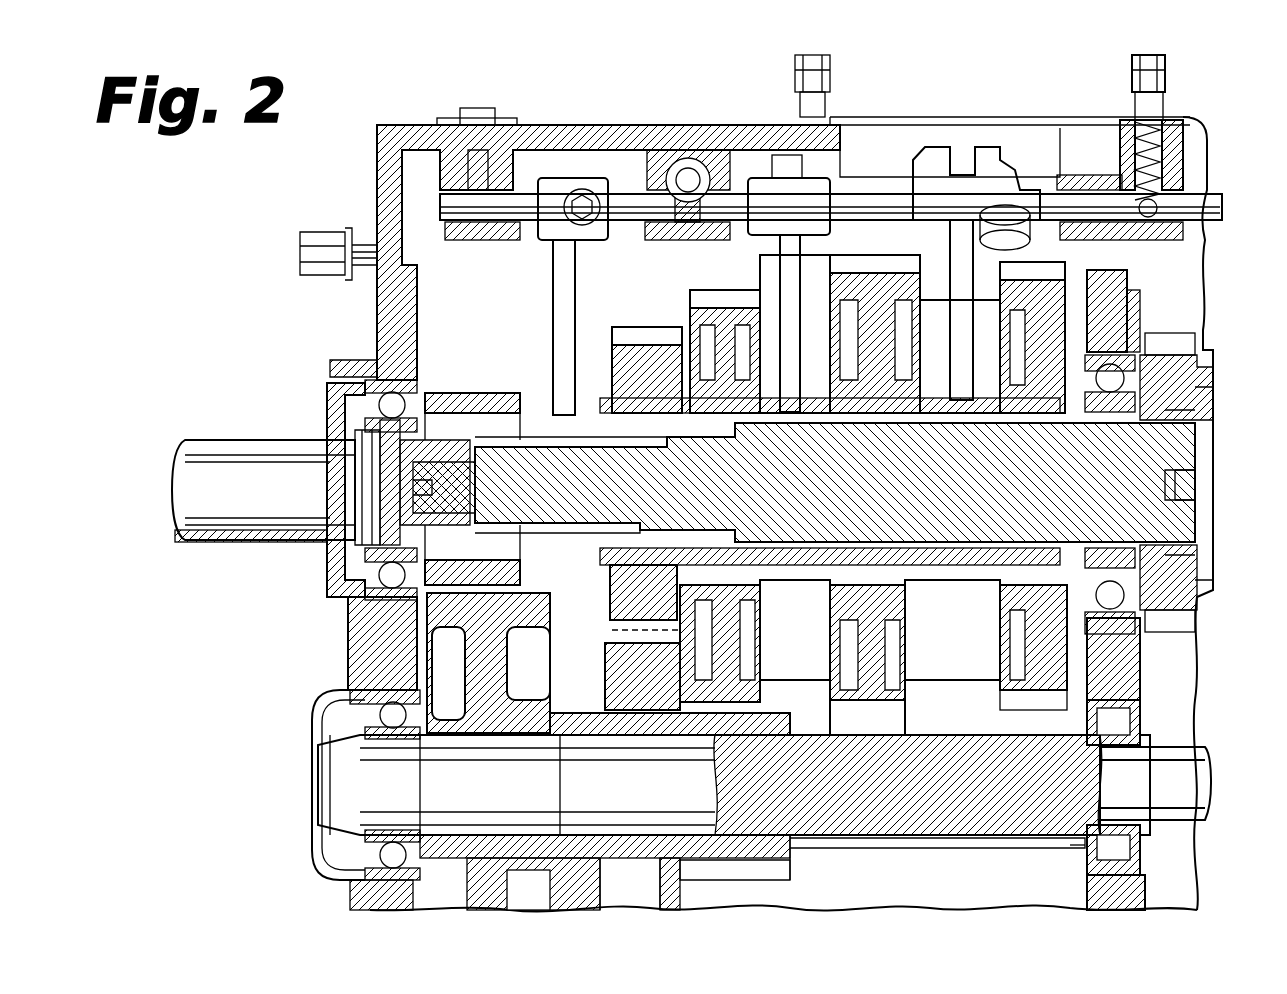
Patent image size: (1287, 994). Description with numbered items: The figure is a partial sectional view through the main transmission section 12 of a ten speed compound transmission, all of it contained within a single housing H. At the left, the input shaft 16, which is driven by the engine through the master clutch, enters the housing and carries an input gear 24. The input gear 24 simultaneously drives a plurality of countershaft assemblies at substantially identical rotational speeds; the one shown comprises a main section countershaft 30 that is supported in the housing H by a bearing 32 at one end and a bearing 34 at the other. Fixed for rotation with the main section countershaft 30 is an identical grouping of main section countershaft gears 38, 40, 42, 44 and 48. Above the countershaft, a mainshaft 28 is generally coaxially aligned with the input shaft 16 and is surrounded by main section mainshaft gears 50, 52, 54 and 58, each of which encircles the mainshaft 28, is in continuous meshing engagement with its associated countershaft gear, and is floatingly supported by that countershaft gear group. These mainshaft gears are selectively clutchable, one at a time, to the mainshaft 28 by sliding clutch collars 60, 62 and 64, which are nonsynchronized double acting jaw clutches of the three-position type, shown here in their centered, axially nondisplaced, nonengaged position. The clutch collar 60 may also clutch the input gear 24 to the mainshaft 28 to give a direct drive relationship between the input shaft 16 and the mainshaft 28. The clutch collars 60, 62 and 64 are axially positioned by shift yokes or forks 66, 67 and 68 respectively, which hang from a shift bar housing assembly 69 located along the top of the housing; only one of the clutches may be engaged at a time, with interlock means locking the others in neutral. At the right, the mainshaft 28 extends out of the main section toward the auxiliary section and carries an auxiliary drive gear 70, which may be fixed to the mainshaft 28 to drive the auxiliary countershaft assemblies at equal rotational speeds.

The housing H is at (377, 186).
The main transmission section 12 is at (597, 112).
The shift bar housing assembly 69 is at (968, 112).
The shift fork 66 is at (553, 282).
The shift fork 67 is at (780, 258).
The shift fork 68 is at (950, 356).
The mainshaft 28 is at (1165, 528).
The input shaft 16 is at (222, 495).
The input gear 24 is at (455, 383).
The mainshaft gear 50 is at (635, 335).
The mainshaft gear 52 is at (700, 292).
The mainshaft gear 54 is at (885, 278).
The mainshaft gear 58 is at (1060, 285).
The auxiliary drive gear 70 is at (1185, 332).
The clutch collar 60 is at (603, 560).
The main section countershaft gear 38 is at (518, 648).
The main section countershaft gear 40 is at (610, 662).
The clutch collar 62 is at (772, 588).
The clutch collar 64 is at (936, 586).
The main section countershaft 30 is at (600, 758).
The bearing 32 is at (375, 715).
The main section countershaft gear 42 is at (778, 862).
The main section countershaft gear 44 is at (876, 838).
The main section countershaft gear 48 is at (1048, 838).
The bearing 34 is at (1120, 847).